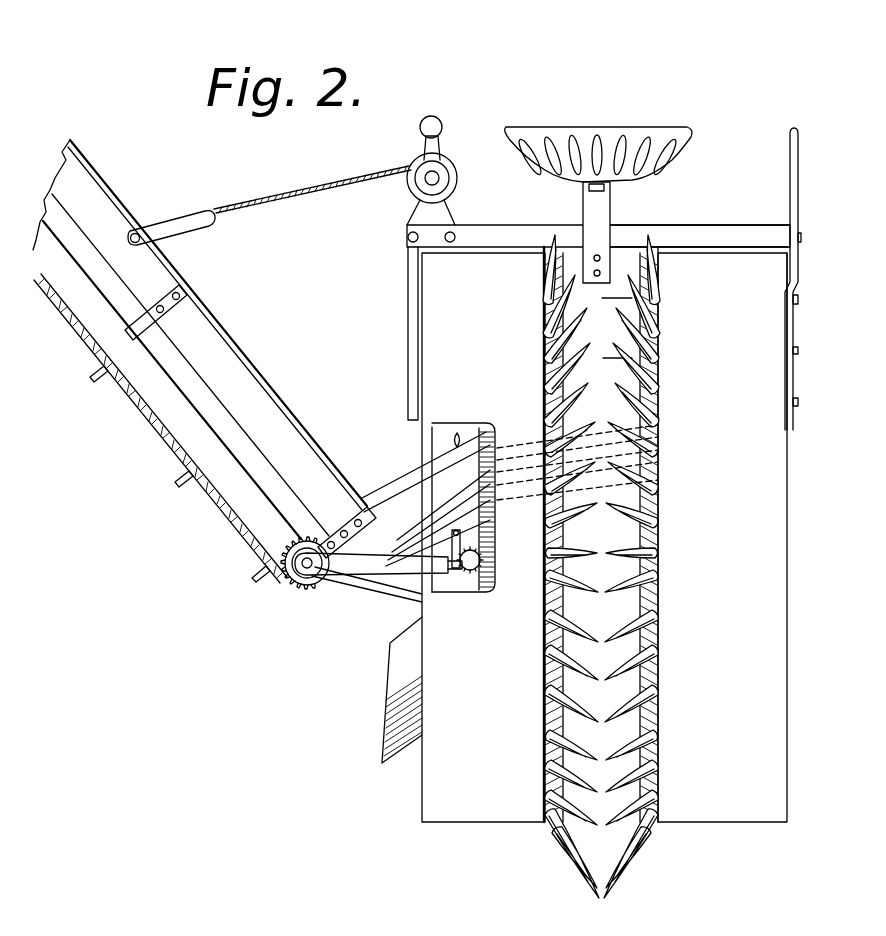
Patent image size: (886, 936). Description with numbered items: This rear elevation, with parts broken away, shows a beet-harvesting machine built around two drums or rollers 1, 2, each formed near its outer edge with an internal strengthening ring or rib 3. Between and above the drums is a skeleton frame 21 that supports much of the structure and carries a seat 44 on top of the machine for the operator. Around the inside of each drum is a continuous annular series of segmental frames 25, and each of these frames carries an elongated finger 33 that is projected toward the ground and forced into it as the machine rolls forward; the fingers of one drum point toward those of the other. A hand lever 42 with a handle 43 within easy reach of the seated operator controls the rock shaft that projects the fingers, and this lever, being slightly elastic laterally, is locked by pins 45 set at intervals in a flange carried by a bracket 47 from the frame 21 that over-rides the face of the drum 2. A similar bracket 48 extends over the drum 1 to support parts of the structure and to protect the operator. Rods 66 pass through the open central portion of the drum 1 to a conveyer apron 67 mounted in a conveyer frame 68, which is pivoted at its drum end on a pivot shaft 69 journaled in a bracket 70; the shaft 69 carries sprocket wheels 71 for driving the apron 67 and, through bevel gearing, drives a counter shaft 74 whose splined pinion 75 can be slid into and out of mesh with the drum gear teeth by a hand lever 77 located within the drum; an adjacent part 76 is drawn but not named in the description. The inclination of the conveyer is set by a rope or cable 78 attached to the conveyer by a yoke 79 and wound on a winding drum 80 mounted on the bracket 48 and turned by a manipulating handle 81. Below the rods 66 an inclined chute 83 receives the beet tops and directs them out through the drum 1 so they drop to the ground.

The drum 1 is at (480, 733).
The drum 2 is at (722, 537).
The internal strengthening ring 3 is at (427, 440).
The skeleton frame 21 is at (636, 534).
The segmental frame 25 is at (650, 562).
The elongated finger 33 is at (580, 867).
The hand lever 42 is at (790, 262).
The handle 43 is at (790, 170).
The seat 44 is at (590, 140).
The pins 45 is at (793, 355).
The bracket 47 is at (716, 237).
The bracket 48 is at (505, 240).
The rods 66 is at (394, 488).
The conveyer apron 67 is at (223, 510).
The conveyer frame 68 is at (243, 390).
The pivot shaft 69 is at (300, 583).
The bracket 70 is at (372, 572).
The sprocket wheels 71 is at (263, 560).
The counter shaft 74 is at (410, 583).
The pinion 75 is at (486, 594).
The link 76 is at (441, 578).
The hand lever 77 is at (460, 438).
The rope or cable 78 is at (287, 192).
The yoke 79 is at (167, 228).
The winding drum 80 is at (470, 152).
The manipulating handle 81 is at (433, 123).
The chute 83 is at (396, 727).